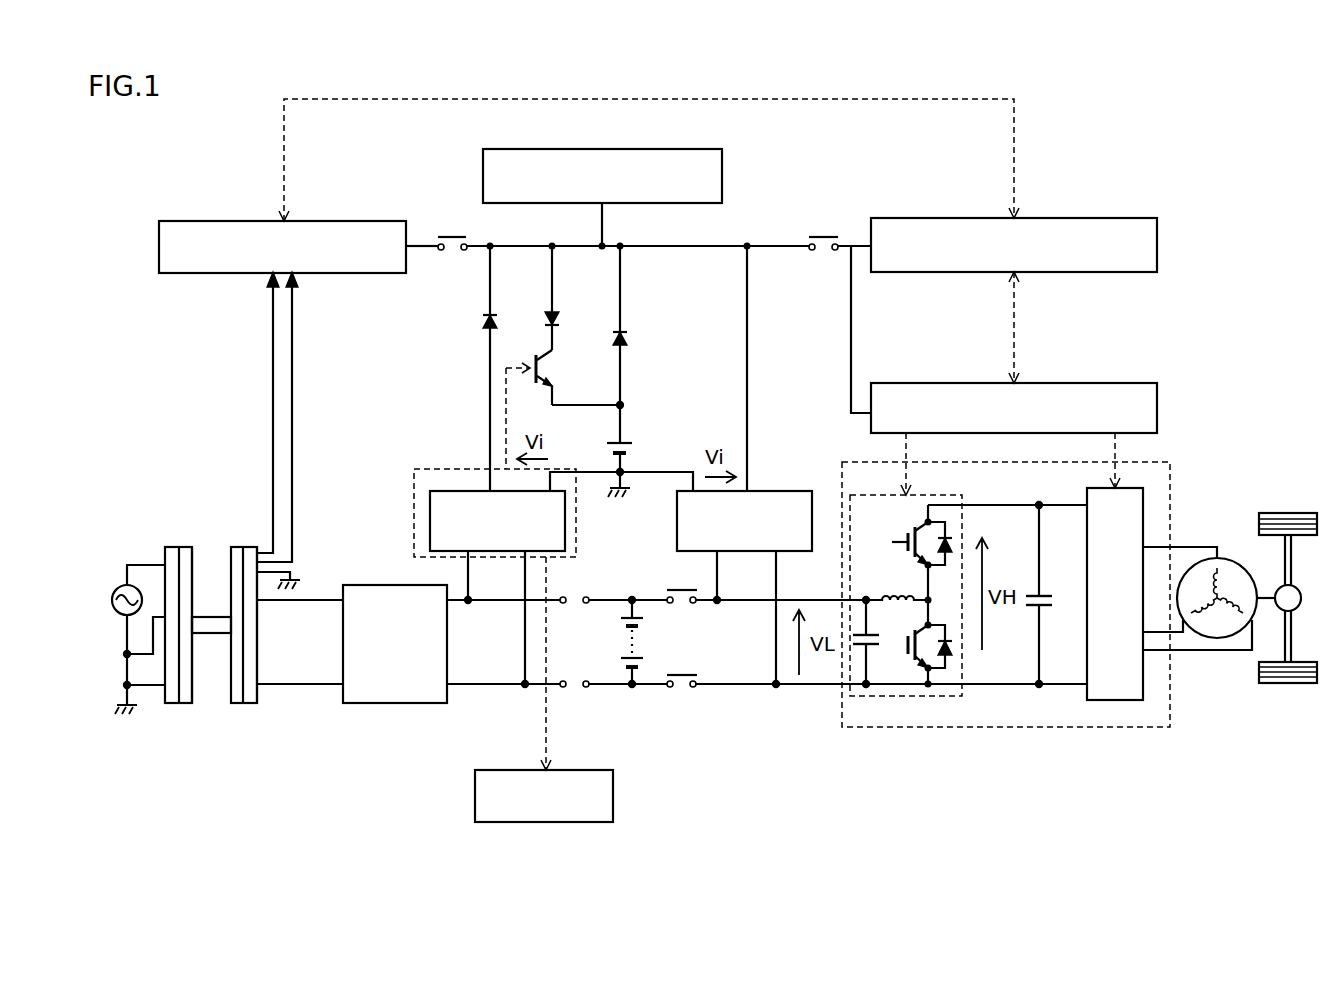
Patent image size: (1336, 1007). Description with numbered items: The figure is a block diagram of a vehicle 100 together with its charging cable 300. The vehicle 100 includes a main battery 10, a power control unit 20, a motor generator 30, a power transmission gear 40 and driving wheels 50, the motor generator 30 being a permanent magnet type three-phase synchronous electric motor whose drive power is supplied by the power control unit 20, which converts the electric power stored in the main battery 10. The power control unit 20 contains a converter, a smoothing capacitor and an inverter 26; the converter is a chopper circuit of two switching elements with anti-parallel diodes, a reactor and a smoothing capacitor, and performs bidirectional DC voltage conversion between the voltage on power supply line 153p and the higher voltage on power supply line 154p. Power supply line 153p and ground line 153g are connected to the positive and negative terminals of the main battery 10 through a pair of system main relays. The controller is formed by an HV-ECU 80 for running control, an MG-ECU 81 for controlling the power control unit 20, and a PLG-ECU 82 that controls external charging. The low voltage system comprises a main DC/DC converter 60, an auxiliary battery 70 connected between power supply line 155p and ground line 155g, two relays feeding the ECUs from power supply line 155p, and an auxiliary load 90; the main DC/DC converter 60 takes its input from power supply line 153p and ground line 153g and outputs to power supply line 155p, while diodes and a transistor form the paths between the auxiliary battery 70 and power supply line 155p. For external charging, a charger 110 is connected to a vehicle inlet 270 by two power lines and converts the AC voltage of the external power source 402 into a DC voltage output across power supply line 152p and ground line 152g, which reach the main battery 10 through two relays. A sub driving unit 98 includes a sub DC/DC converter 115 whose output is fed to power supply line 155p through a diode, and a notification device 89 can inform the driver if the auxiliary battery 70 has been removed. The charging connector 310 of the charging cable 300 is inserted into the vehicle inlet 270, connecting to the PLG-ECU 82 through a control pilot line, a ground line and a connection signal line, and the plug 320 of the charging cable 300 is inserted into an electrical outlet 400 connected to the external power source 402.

The vehicle 100 is at (1264, 133).
The main battery 10 is at (625, 656).
The power control unit (PCU) 20 is at (1170, 706).
The inverter 26 is at (1110, 488).
The motor generator 30 is at (1228, 560).
The power transmission gear 40 is at (1298, 590).
The driving wheels 50 is at (1299, 513).
The main DC/DC converter 60 is at (777, 491).
The auxiliary battery 70 is at (606, 447).
The HV-ECU 80 is at (1116, 218).
The MG-ECU 81 is at (1116, 383).
The PLG-ECU 82 is at (362, 221).
The notification device 89 is at (588, 770).
The auxiliary load 90 is at (672, 149).
The sub driving unit 98 is at (436, 469).
The charger 110 is at (390, 703).
The sub DC/DC converter 115 is at (565, 524).
The power supply line 152p is at (490, 604).
The ground line 152g is at (486, 688).
The power supply line 153p is at (748, 604).
The ground line 153g is at (746, 688).
The power supply line 154p is at (1068, 505).
The power supply line 155p is at (640, 246).
The ground line 155g is at (662, 472).
The vehicle inlet 270 is at (250, 704).
The charging cable 300 is at (213, 634).
The charging connector 310 is at (236, 704).
The plug 320 is at (186, 547).
The electrical outlet 400 is at (172, 547).
The external power source 402 is at (114, 588).